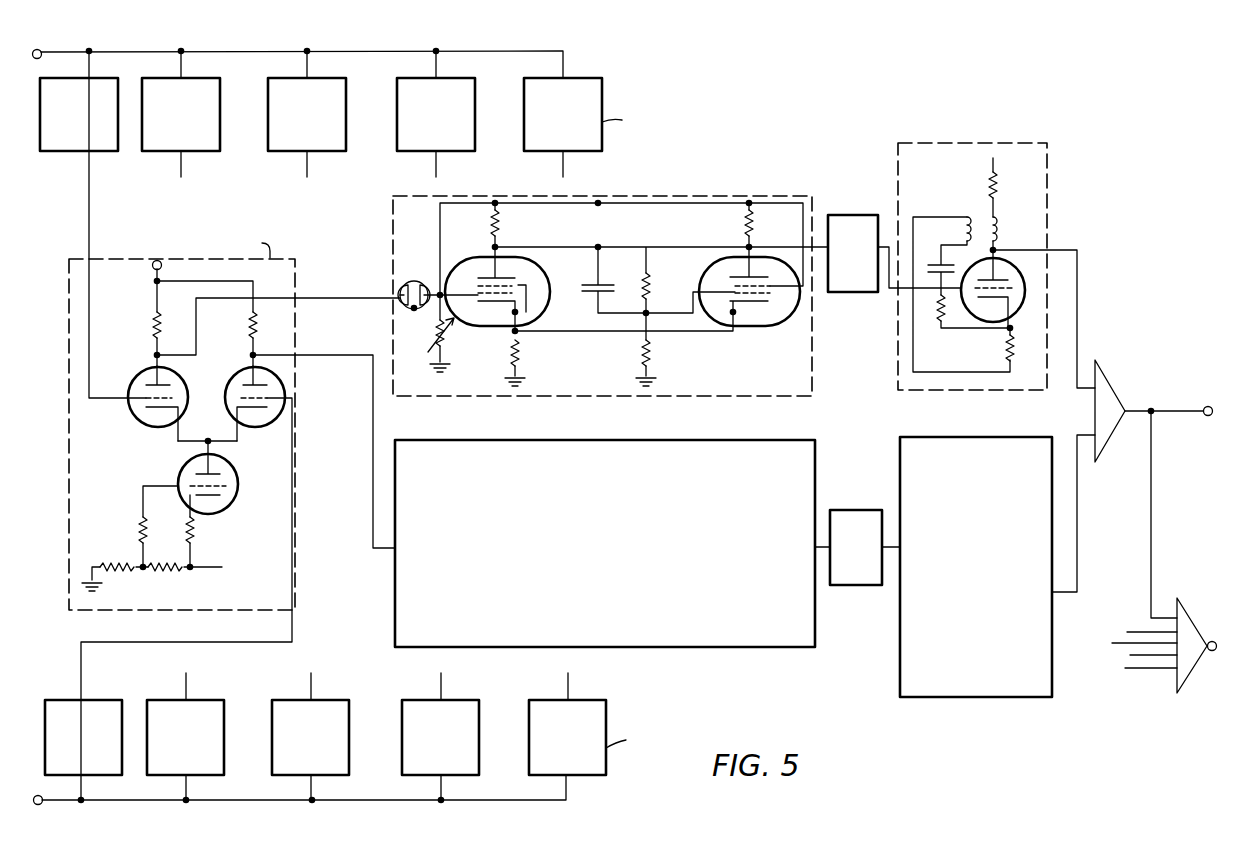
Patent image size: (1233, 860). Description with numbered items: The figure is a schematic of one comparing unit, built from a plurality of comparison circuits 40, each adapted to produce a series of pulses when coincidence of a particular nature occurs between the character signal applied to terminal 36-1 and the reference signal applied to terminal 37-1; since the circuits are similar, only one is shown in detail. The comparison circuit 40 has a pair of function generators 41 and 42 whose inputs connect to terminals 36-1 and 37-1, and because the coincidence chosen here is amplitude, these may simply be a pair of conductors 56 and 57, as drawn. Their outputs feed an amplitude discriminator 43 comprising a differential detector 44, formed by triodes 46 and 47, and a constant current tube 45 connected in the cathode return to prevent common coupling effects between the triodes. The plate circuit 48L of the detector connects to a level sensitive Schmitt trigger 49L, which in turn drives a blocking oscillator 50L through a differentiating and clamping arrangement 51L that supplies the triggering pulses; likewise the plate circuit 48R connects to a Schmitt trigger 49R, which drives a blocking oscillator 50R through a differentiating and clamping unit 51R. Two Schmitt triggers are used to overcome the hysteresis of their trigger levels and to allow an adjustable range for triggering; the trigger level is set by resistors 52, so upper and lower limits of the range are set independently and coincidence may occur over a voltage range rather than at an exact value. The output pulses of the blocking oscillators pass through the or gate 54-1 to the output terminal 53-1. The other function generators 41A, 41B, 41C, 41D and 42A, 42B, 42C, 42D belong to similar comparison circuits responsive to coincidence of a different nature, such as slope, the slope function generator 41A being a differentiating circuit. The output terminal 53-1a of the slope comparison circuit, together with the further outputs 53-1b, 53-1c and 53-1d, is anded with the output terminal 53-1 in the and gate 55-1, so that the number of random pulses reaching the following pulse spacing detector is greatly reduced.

The terminal 36-1 is at (298, 55).
The terminal 37-1 is at (300, 798).
The comparison circuit 40 is at (684, 192).
The function generator 41 is at (70, 125).
The slope function generator 41A is at (195, 125).
The function generator 41B is at (320, 125).
The function generator 41C is at (449, 125).
The function generator 41D is at (575, 125).
The function generator 42 is at (70, 752).
The function generator 42A is at (200, 752).
The function generator 42B is at (324, 752).
The function generator 42C is at (454, 752).
The function generator 42D is at (580, 752).
The amplitude discriminator 43 is at (297, 506).
The differential detector 44 is at (196, 466).
The constant current tube 45 is at (232, 497).
The triode 46 is at (130, 424).
The triode 47 is at (273, 422).
The plate circuit 48L is at (205, 324).
The plate circuit 48R is at (347, 355).
The Schmitt trigger 49L is at (391, 267).
The Schmitt trigger 49R is at (624, 487).
The blocking oscillator 50L is at (970, 141).
The blocking oscillator 50R is at (997, 566).
The differentiating and clamping arrangement 51L is at (866, 272).
The differentiating and clamping unit 51R is at (867, 566).
The resistor 52 is at (446, 338).
The output terminal 53-1 is at (1169, 504).
The output terminal 53-1a is at (1127, 632).
The AND gate input 53-1b is at (1112, 643).
The AND gate input 53-1c is at (1130, 655).
The AND gate input 53-1d is at (1125, 668).
The or gate 54-1 is at (1116, 406).
The and gate 55-1 is at (1194, 620).
The conductor 56 is at (89, 118).
The conductor 57 is at (81, 730).